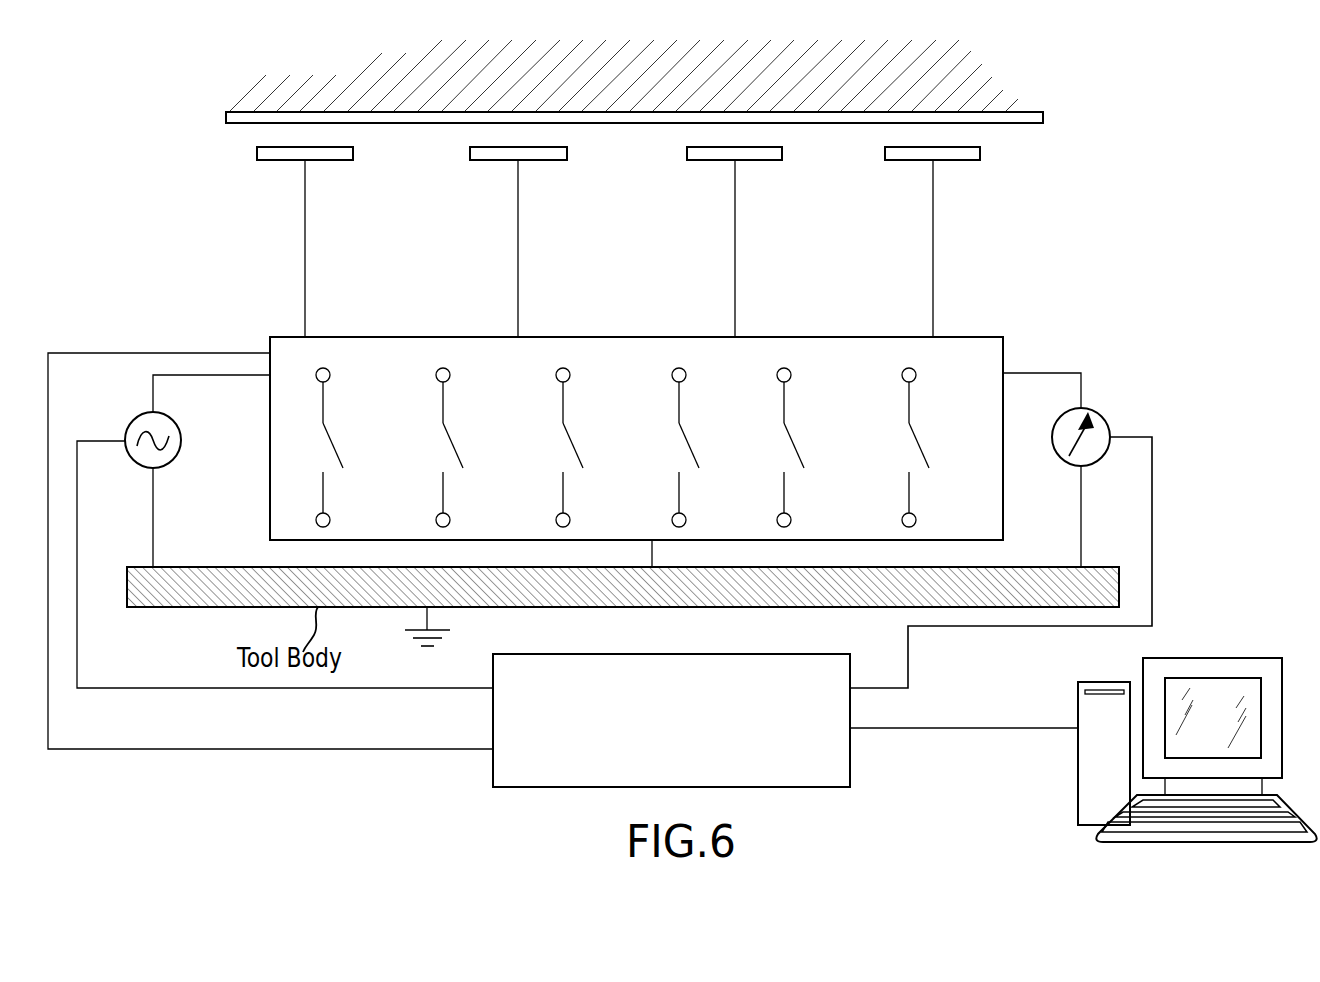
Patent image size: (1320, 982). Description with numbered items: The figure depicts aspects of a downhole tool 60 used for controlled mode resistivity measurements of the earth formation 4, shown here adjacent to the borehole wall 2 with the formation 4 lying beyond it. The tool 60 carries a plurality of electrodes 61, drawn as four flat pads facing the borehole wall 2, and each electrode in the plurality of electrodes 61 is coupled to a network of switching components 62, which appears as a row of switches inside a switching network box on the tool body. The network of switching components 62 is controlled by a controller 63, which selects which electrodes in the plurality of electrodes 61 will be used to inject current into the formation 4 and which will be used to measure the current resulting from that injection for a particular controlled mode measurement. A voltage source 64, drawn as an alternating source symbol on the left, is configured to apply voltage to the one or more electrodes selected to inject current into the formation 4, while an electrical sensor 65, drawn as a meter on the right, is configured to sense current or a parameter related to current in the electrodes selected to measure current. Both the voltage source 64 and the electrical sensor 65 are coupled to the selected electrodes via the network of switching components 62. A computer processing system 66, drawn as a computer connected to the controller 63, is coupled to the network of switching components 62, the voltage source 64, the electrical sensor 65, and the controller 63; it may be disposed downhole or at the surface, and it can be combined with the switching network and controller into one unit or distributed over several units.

The borehole wall 2 is at (1040, 123).
The earth formation 4 is at (648, 58).
The downhole tool 60 is at (232, 194).
The plurality of electrodes 61 is at (550, 160).
The network of switching components 62 is at (679, 410).
The controller 63 is at (736, 722).
The voltage source 64 is at (172, 462).
The electrical sensor 65 is at (1100, 412).
The computer processing system 66 is at (1078, 774).